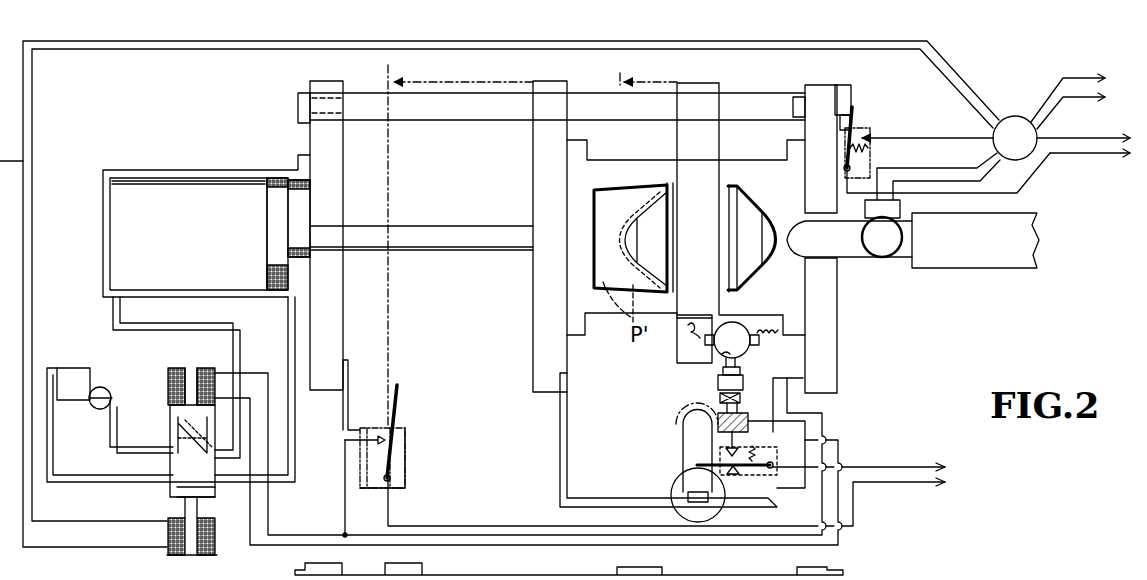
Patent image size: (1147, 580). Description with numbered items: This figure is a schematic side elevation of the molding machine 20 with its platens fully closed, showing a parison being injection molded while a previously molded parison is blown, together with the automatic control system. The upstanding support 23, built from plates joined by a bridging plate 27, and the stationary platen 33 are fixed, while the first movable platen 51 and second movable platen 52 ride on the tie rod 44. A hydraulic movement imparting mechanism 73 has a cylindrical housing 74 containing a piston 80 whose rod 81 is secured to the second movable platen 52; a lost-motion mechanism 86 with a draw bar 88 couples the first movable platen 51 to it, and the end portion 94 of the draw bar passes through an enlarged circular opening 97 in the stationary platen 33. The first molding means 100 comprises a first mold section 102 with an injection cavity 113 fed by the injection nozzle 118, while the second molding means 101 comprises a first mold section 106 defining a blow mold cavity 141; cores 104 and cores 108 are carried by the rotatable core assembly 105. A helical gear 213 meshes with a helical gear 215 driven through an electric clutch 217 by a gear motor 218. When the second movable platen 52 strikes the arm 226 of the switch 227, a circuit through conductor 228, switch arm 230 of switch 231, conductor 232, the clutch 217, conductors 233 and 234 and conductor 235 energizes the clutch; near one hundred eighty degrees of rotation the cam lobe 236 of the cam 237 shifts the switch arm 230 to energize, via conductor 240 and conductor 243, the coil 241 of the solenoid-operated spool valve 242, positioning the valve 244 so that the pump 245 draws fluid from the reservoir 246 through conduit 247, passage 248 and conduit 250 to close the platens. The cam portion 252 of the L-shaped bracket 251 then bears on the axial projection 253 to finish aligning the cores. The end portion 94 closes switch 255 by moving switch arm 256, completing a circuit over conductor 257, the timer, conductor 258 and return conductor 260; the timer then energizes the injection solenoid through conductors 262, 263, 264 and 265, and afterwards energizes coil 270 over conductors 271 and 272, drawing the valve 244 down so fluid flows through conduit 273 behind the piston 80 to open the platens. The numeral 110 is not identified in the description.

The molding machine 20 is at (527, 373).
The upstanding support 23 is at (323, 138).
The bridging plate 27 is at (67, 520).
The stationary platen 33 is at (830, 157).
The tie rod 44 is at (435, 108).
The first movable platen 51 is at (706, 140).
The second movable platen 52 is at (533, 144).
The hydraulic movement imparting mechanism 73 is at (172, 166).
The cylindrical housing 74 is at (183, 220).
The piston 80 is at (277, 221).
The rod 81 is at (433, 243).
The lost-motion mechanism 86 is at (735, 100).
The draw bar 88 is at (763, 105).
The end portion 94 is at (850, 105).
The enlarged circular opening 97 is at (815, 102).
The first molding means 100 is at (735, 160).
The second molding means 101 is at (620, 135).
The first mold section 102 is at (778, 192).
The core 104 is at (752, 257).
The core assembly 105 is at (702, 257).
The first mold section 106 is at (560, 170).
The core 108 is at (657, 257).
The plate portion 110 is at (793, 288).
The injection cavity 113 is at (742, 278).
The injection nozzle 118 is at (848, 250).
The blow mold cavity 141 is at (590, 245).
The helical gear 213 is at (693, 403).
The helical gear 215 is at (751, 412).
The electric clutch 217 is at (733, 382).
The gear motor 218 is at (727, 339).
The arm 226 is at (398, 390).
The switch 227 is at (410, 442).
The conductor 228 is at (913, 465).
The switch arm 230 is at (693, 455).
The switch 231 is at (751, 433).
The conductor 232 is at (805, 480).
The conductor 233 is at (832, 415).
The conductor 234 is at (345, 480).
The conductor 235 is at (913, 487).
The cam lobe 236 is at (720, 520).
The cam 237 is at (683, 478).
The conductor 240 is at (838, 428).
The coil 241 is at (212, 347).
The solenoid-operated spool valve 242 is at (162, 558).
The conductor 243 is at (250, 373).
The valve 244 is at (183, 470).
The pump 245 is at (117, 387).
The reservoir 246 is at (75, 377).
The conduit 247 is at (118, 420).
The passage 248 is at (193, 450).
The conduit 250 is at (220, 320).
The L-shaped bracket 251 is at (565, 432).
The cam portion 252 is at (770, 505).
The axial projection 253 is at (687, 493).
The switch 255 is at (866, 133).
The switch arm 256 is at (858, 112).
The conductor 257 is at (1102, 137).
The conductor 258 is at (935, 137).
The return conductor 260 is at (1050, 170).
The conductor 262 is at (1047, 80).
The conductor 263 is at (915, 167).
The conductor 264 is at (1000, 167).
The conductor 265 is at (1068, 100).
The coil 270 is at (215, 548).
The conductor 271 is at (943, 50).
The conductor 272 is at (33, 127).
The conduit 273 is at (300, 427).